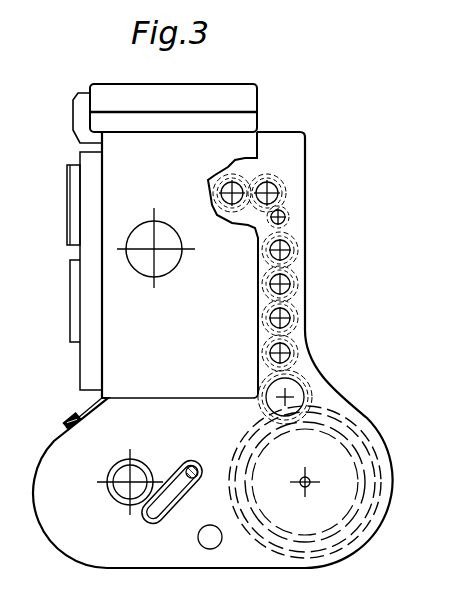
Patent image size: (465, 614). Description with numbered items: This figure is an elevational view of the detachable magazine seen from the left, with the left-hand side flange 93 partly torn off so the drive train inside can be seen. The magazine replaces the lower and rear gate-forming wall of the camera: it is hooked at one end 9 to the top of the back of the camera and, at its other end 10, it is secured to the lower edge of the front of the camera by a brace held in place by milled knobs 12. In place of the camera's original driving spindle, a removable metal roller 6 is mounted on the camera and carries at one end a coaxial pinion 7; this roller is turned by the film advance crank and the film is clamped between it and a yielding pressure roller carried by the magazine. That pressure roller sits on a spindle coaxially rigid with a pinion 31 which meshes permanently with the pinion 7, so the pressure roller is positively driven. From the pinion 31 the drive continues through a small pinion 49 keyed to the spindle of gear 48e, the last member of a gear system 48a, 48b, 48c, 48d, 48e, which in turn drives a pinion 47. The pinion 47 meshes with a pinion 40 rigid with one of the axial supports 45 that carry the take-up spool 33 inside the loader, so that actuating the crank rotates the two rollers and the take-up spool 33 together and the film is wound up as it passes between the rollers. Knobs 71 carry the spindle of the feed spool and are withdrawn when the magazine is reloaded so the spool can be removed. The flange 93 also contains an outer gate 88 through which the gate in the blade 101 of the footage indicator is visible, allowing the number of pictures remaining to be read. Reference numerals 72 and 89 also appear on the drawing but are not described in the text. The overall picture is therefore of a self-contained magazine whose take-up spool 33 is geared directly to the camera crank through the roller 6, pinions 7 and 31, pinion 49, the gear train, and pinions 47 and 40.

The hooked end 9 is at (262, 130).
The side flange 93 is at (50, 529).
The panel bottom edge 72 is at (159, 407).
The other end 10 is at (96, 397).
The milled knob 12 is at (66, 417).
The coaxial pinion 7 is at (216, 189).
The removable metal roller 6 is at (231, 197).
The pinion 31 is at (283, 191).
The gear 48e is at (292, 221).
The small pinion 49 is at (287, 212).
The gear 48d is at (297, 257).
The gear 48c is at (297, 288).
The gear 48b is at (297, 320).
The gear 48a is at (297, 354).
The pinion 47 is at (310, 388).
The pinion 40 is at (327, 423).
The take-up spool 33 is at (373, 458).
The axial support 45 is at (310, 483).
The knob 71 is at (130, 498).
The blade 101 is at (163, 511).
The outer gate 88 is at (150, 533).
The button 89 is at (211, 549).